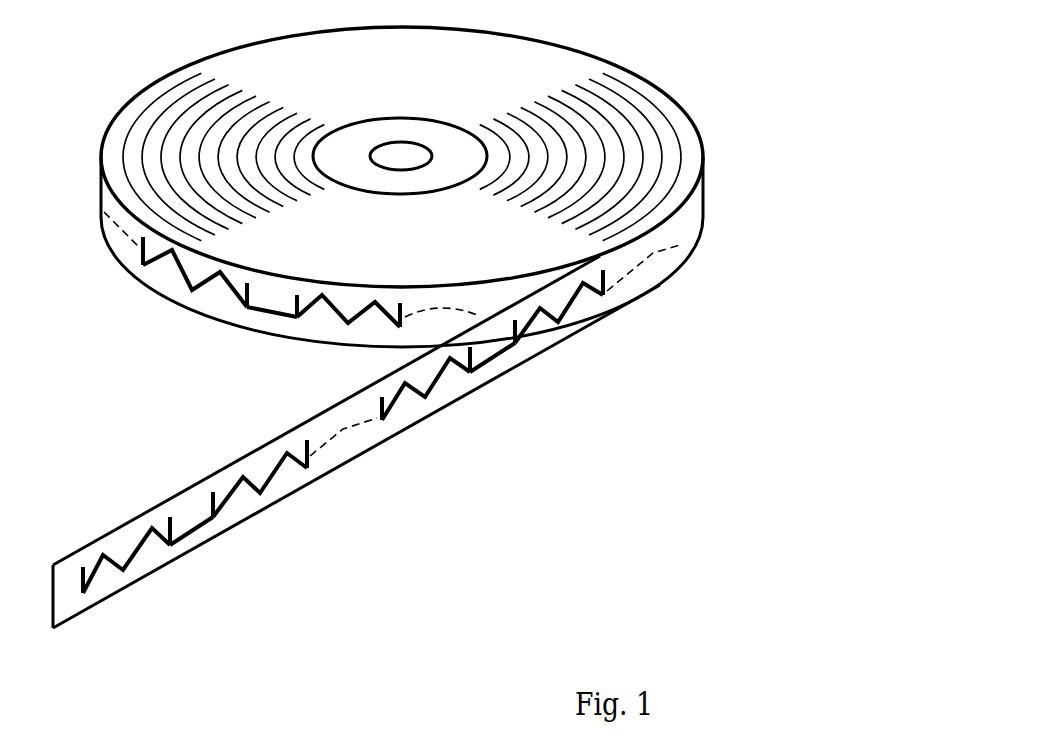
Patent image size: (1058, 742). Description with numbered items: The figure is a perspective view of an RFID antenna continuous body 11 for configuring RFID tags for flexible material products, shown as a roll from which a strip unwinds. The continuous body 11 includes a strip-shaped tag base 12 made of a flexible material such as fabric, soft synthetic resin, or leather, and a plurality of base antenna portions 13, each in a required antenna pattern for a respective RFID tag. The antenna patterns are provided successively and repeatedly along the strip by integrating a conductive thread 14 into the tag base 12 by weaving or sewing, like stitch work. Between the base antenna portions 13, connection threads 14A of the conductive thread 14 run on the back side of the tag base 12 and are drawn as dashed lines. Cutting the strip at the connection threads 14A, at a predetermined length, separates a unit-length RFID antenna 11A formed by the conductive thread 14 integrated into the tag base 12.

The RFID antenna continuous body 11 is at (742, 182).
The RFID antenna 11A is at (300, 550).
The tag base 12 is at (93, 610).
The base antenna portion 13 is at (153, 562).
The conductive thread 14 is at (230, 503).
The connection thread 14A is at (362, 423).